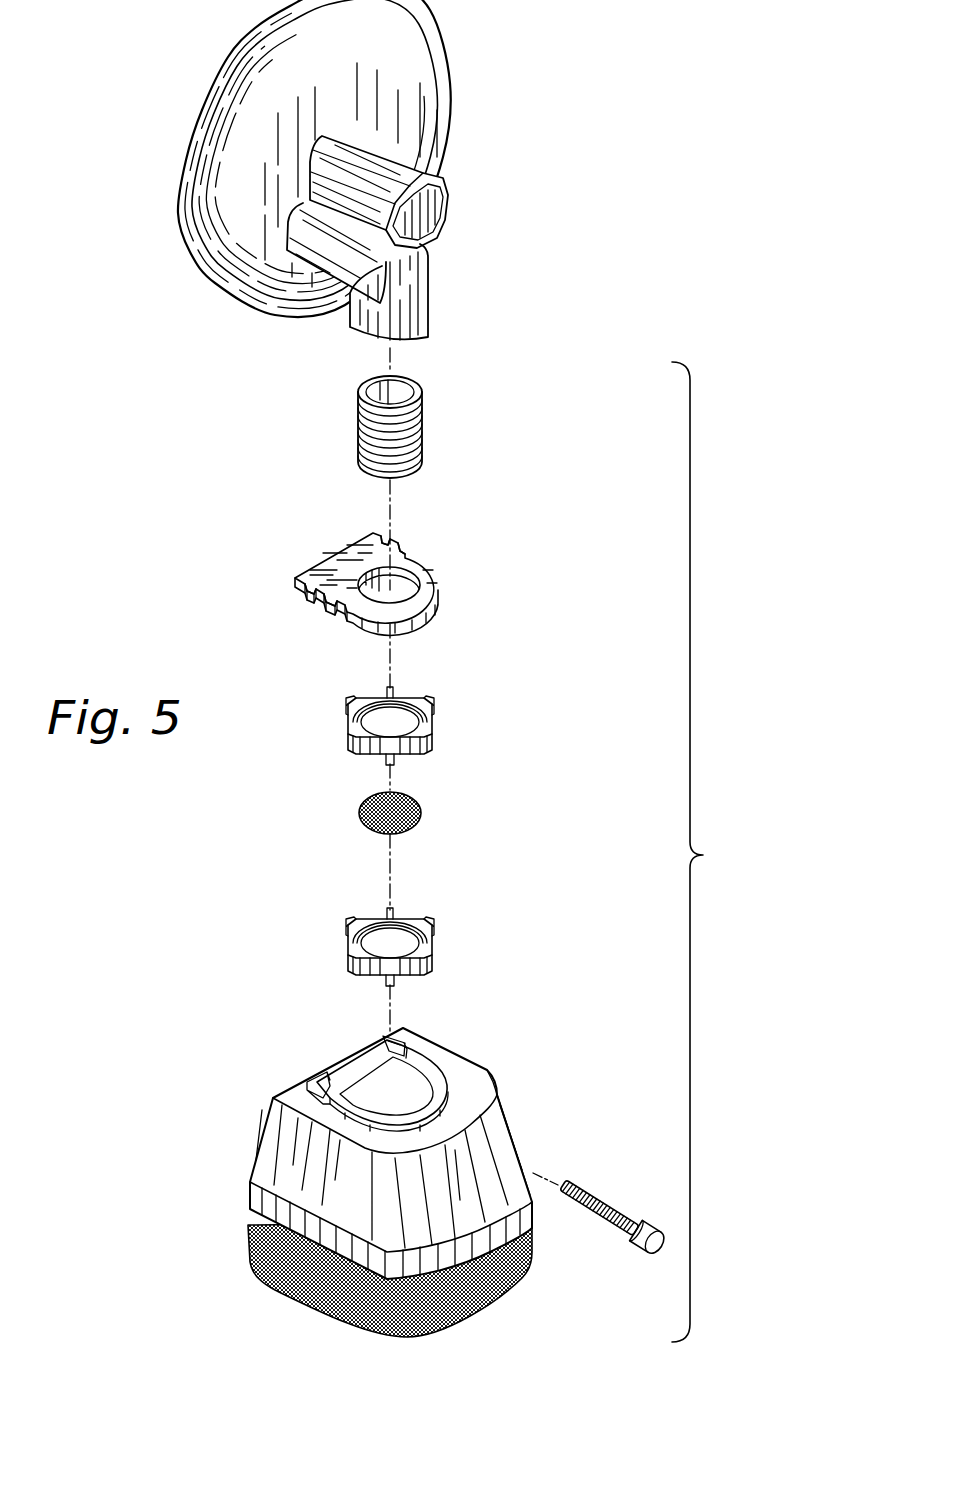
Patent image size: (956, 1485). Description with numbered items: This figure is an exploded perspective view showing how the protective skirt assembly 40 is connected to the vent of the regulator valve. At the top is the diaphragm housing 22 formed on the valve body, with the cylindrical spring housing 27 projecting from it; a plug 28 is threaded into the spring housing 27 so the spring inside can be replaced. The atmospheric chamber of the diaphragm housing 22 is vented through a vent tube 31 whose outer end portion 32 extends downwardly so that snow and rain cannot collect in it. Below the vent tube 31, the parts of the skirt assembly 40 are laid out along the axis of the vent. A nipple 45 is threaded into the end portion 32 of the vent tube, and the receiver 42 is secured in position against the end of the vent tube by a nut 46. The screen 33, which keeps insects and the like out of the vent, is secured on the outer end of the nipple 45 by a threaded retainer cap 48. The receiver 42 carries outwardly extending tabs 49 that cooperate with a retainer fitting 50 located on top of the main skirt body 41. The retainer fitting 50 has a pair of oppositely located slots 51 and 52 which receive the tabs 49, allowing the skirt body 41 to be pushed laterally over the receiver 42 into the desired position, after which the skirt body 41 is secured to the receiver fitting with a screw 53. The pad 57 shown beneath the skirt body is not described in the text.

The diaphragm housing 22 is at (432, 105).
The cylindrical spring housing 27 is at (367, 163).
The plug 28 is at (427, 212).
The vent tube 31 is at (335, 240).
The outer end portion 32 is at (427, 328).
The skirt assembly 40 is at (710, 852).
The main skirt body 41 is at (513, 1127).
The receiver 42 is at (437, 606).
The nipple 45 is at (420, 432).
The nut 46 is at (437, 740).
The threaded retainer cap 48 is at (433, 952).
The outwardly extending tabs 49 is at (383, 534).
The screen 33 is at (419, 800).
The retainer fitting 50 is at (430, 1085).
The slot 51 is at (372, 1060).
The slot 52 is at (405, 1047).
The screw 53 is at (617, 1212).
The pad 57 is at (280, 1265).